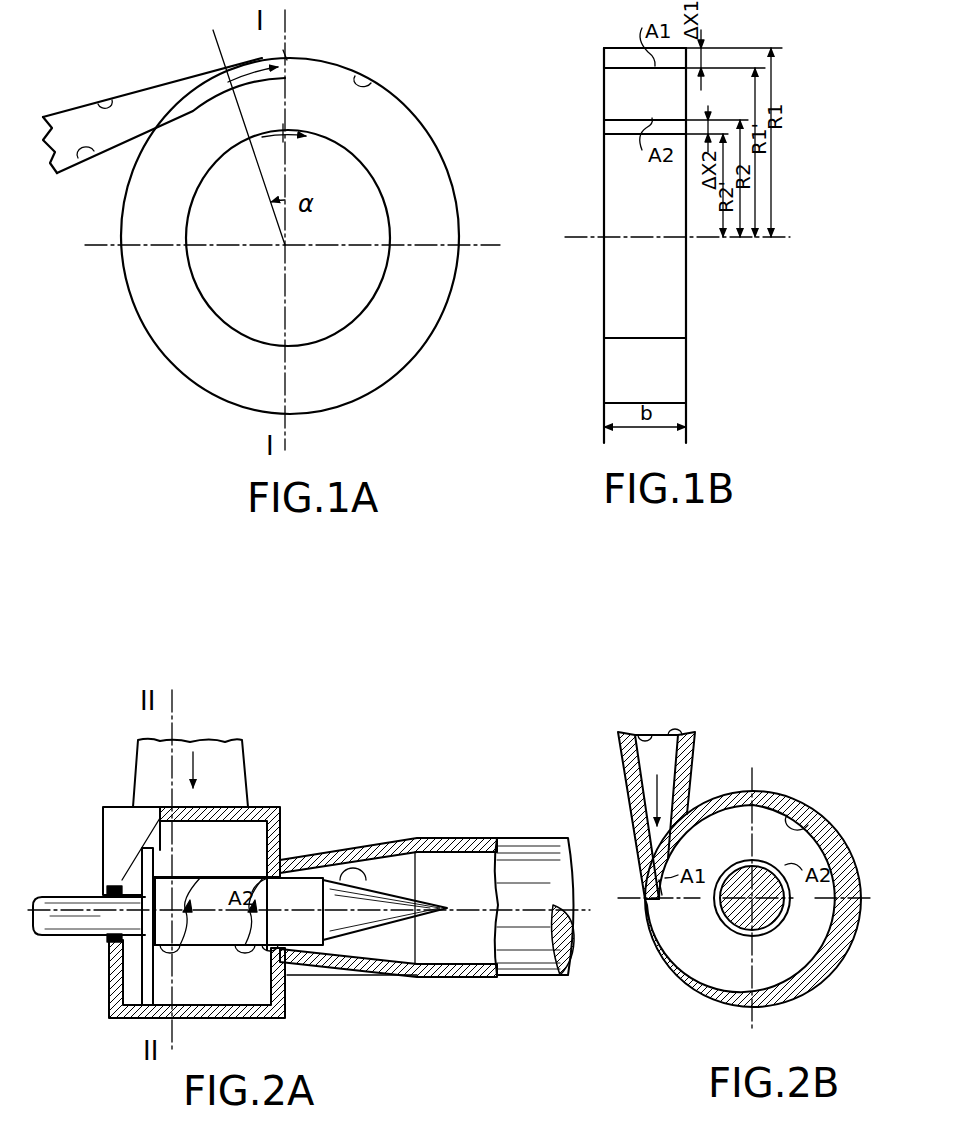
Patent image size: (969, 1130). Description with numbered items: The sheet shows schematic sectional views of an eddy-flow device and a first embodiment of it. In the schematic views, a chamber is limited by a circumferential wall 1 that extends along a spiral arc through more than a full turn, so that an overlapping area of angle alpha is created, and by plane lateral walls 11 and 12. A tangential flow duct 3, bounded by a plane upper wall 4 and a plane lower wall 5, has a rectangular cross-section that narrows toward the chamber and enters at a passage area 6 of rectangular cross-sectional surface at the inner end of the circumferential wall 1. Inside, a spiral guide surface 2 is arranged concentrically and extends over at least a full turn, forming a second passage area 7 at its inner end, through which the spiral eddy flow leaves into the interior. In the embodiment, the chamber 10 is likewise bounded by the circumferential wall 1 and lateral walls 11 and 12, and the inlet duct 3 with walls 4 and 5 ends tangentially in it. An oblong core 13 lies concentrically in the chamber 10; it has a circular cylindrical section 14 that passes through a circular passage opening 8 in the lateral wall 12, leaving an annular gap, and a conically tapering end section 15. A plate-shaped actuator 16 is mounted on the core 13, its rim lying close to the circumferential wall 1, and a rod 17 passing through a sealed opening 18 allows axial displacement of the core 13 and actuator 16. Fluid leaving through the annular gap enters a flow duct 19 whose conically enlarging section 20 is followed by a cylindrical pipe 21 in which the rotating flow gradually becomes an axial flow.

In FIG. 1A, the circumferential wall 1 is at (366, 84).
In FIG. 1B, the circumferential wall 1 is at (624, 45).
In FIG. 2B, the circumferential wall 1 is at (808, 826).
In FIG. 1A, the spiral guide surface 2 is at (378, 173).
In FIG. 1B, the spiral guide surface 2 is at (616, 122).
In FIG. 1A, the tangential flow duct 3 is at (124, 114).
In FIG. 2B, the tangential flow duct 3 is at (655, 745).
In FIG. 1A, the upper wall 4 is at (106, 103).
In FIG. 2B, the upper wall 4 is at (648, 735).
In FIG. 1A, the lower wall 5 is at (84, 152).
In FIG. 2B, the lower wall 5 is at (672, 735).
In FIG. 1A, the passage area 6 is at (285, 58).
In FIG. 1B, the passage area 6 is at (612, 60).
In FIG. 2B, the passage area 6 is at (660, 868).
In FIG. 1A, the passage area 7 is at (283, 130).
In FIG. 1B, the passage area 7 is at (612, 130).
In FIG. 2A, the circular passage opening 8 is at (262, 950).
In FIG. 2A, the chamber 10 is at (250, 838).
In FIG. 1B, the lateral wall 11 is at (604, 283).
In FIG. 2A, the lateral wall 11 is at (112, 985).
In FIG. 1B, the lateral wall 12 is at (686, 280).
In FIG. 2A, the lateral wall 12 is at (283, 982).
In FIG. 2A, the oblong core 13 is at (322, 860).
In FIG. 2A, the circular cylindrical section 14 is at (238, 890).
In FIG. 2B, the circular cylindrical section 14 is at (765, 913).
In FIG. 2A, the conically tapering end section 15 is at (415, 904).
In FIG. 2A, the actuator 16 is at (153, 990).
In FIG. 2A, the rod 17 is at (86, 910).
In FIG. 2A, the opening 18 is at (112, 944).
In FIG. 2A, the flow duct 19 is at (366, 985).
In FIG. 2A, the conically enlarging section 20 is at (372, 858).
In FIG. 2A, the cylindrical pipe 21 is at (450, 978).